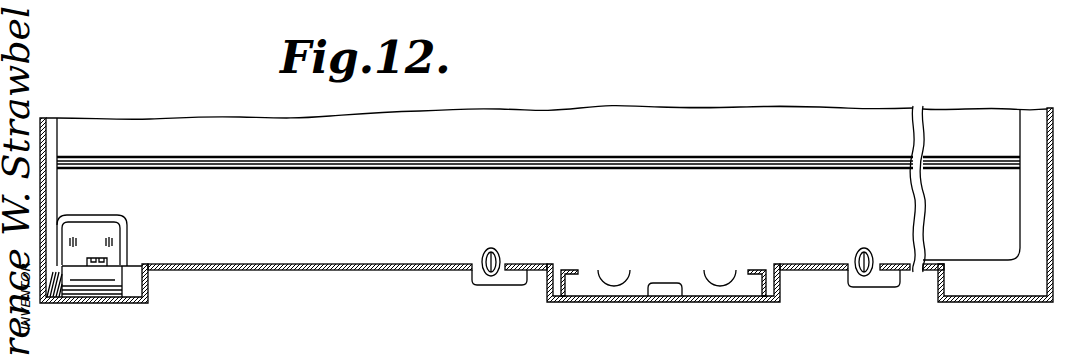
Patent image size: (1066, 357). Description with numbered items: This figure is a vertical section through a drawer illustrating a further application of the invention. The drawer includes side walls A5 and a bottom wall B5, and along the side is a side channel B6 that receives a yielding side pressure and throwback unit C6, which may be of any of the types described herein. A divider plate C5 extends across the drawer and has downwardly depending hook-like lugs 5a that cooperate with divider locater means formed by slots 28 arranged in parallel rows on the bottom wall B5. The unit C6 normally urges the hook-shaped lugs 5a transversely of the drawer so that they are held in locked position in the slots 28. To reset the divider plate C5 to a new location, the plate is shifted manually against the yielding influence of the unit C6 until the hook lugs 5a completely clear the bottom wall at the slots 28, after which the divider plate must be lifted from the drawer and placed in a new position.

The side wall A5 is at (50, 132).
The bottom wall B5 is at (370, 246).
The side channel B6 is at (152, 288).
The divider plate C5 is at (538, 180).
The yielding side pressure and throwback unit C6 is at (127, 244).
The slot 28 is at (458, 272).
The hook-like lug 5a is at (894, 313).